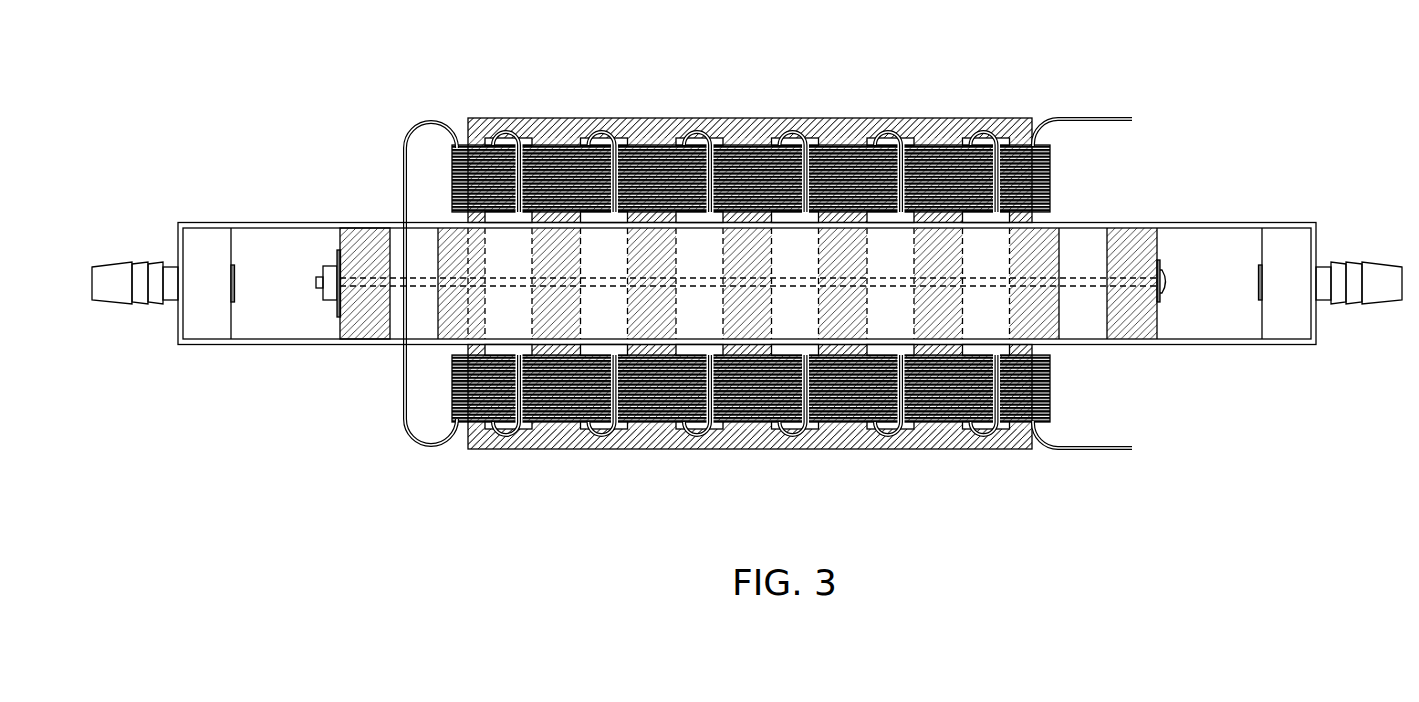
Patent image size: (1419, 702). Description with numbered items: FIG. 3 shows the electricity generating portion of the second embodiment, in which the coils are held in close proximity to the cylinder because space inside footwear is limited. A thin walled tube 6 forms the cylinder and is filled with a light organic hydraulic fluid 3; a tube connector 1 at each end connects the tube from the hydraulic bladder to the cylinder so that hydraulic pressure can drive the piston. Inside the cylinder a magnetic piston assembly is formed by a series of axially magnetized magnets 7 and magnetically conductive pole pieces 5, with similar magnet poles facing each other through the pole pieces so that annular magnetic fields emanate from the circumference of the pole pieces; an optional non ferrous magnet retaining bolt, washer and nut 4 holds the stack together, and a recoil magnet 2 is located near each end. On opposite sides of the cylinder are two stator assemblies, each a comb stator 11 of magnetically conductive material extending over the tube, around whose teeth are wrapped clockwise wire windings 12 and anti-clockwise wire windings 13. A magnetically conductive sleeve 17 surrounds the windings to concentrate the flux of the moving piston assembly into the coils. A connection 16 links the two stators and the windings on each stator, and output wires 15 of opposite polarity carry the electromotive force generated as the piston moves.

The tube connector 1 is at (114, 307).
The recoil magnet 2 is at (208, 308).
The light organic hydraulic fluid 3 is at (265, 257).
The non ferrous magnet retaining bolt, washer and nut 4 is at (318, 303).
The pole piece 5 is at (367, 303).
The thin walled tube 6 is at (333, 346).
The axially magnetized magnet 7 is at (406, 249).
The comb stator 11 is at (735, 126).
The clockwise wire windings 12 is at (556, 141).
The anti-clockwise wire windings 13 is at (484, 142).
The output wires 15 is at (1112, 112).
The connection between stators 16 is at (403, 437).
The magnetically conductive sleeve 17 is at (856, 141).